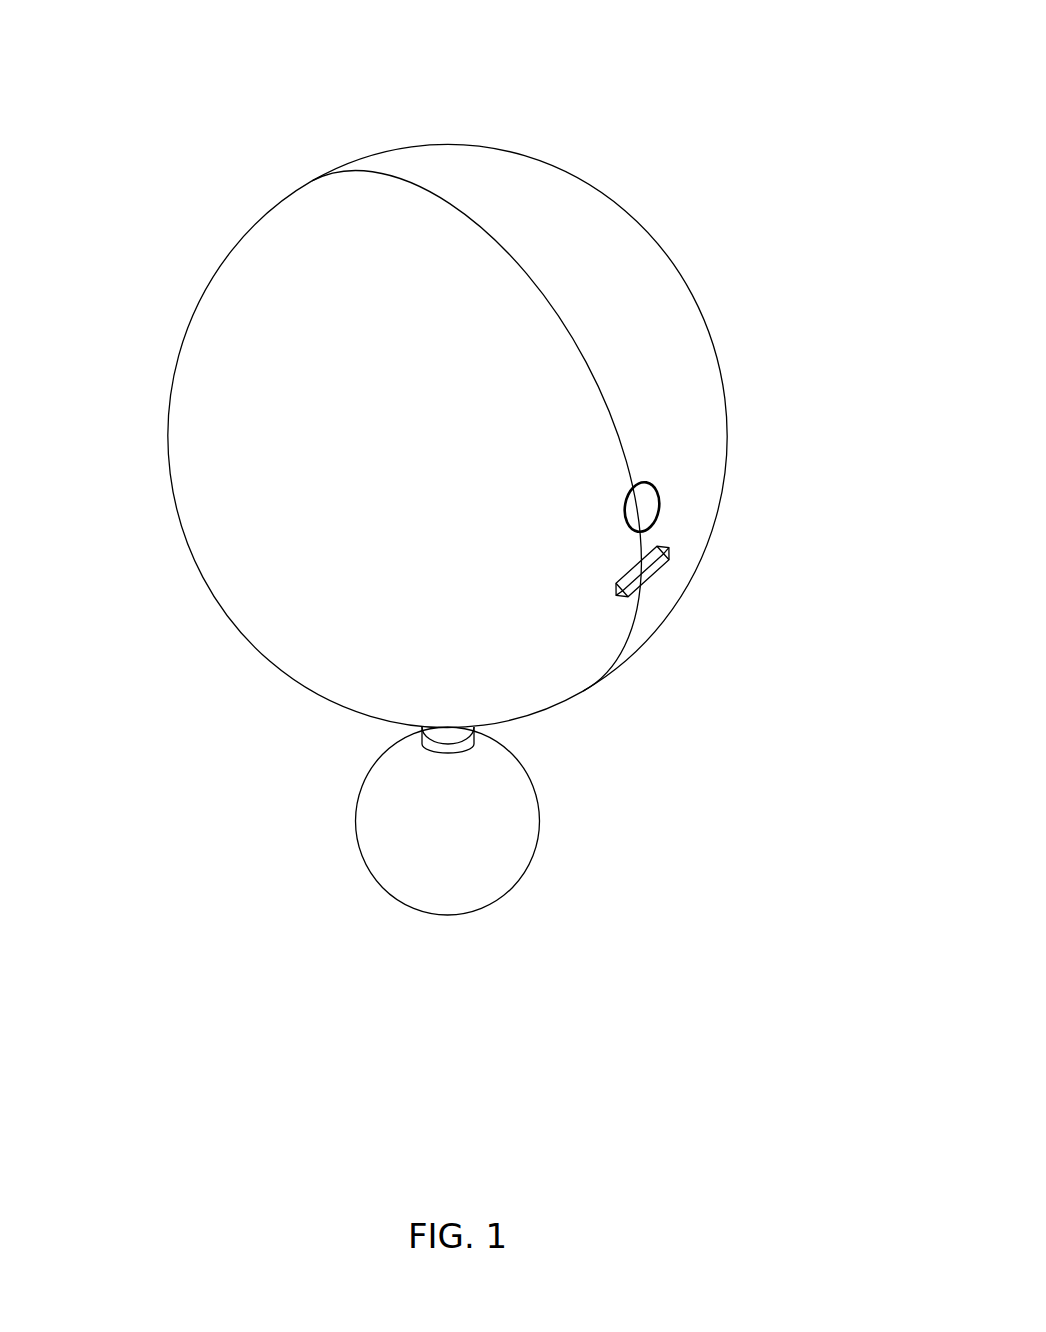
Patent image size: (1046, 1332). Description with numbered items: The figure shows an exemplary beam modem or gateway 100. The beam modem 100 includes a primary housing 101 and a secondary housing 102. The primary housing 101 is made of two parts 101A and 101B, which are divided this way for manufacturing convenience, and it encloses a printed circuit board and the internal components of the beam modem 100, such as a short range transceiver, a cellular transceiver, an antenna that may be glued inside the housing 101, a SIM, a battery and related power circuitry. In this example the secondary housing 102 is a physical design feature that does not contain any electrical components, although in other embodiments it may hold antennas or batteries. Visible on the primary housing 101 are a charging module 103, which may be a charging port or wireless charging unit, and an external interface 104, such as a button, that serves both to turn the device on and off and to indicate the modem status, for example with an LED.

The beam modem 100 is at (550, 76).
The primary housing 101 is at (666, 255).
The first part of primary housing 101A is at (666, 392).
The second part of primary housing 101B is at (247, 450).
The secondary housing 102 is at (543, 815).
The charging module 103 is at (622, 581).
The external interface 104 is at (636, 502).